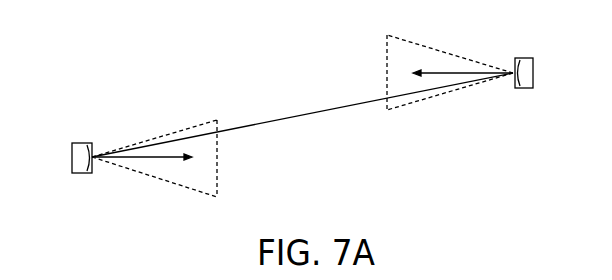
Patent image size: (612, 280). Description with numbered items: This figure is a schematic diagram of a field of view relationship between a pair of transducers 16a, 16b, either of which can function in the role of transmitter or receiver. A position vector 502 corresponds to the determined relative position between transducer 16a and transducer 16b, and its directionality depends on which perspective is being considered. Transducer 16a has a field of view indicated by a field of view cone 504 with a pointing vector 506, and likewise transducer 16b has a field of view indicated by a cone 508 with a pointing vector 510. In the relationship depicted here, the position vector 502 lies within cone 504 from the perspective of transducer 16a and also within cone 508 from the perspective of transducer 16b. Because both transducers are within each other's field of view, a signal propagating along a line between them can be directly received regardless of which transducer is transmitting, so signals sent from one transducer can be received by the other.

The transducer 16a is at (72, 143).
The transducer 16b is at (533, 58).
The position vector 502 is at (350, 106).
The field of view cone 504 is at (183, 185).
The pointing vector 506 is at (160, 159).
The cone 508 is at (422, 43).
The pointing vector 510 is at (446, 73).